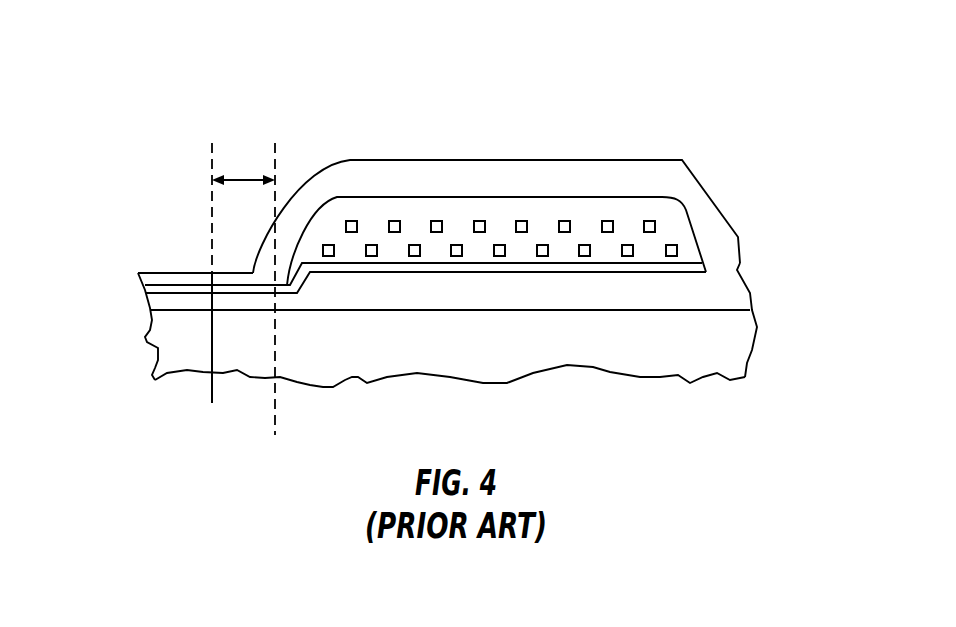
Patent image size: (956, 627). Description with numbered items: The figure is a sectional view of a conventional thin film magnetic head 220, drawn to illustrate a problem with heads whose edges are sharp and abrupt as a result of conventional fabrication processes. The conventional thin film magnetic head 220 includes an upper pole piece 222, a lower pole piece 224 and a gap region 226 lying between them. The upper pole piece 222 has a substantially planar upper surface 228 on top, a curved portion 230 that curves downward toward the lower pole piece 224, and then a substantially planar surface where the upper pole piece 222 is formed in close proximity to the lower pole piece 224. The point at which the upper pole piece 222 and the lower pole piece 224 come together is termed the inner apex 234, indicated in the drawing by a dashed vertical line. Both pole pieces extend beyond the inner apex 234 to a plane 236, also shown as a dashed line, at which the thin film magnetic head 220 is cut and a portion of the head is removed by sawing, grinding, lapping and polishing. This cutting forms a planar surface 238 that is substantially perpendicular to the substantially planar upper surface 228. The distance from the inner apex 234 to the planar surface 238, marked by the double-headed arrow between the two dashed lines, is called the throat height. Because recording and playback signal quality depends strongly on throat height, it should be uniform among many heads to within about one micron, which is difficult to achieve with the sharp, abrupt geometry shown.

The conventional thin film magnetic head 220 is at (696, 104).
The upper pole piece 222 is at (311, 202).
The lower pole piece 224 is at (447, 344).
The gap region 226 is at (396, 267).
The substantially planar upper surface 228 is at (683, 208).
The curved portion 230 is at (312, 178).
The inner apex 234 is at (287, 108).
The plane 236 is at (212, 168).
The planar surface 238 is at (201, 365).